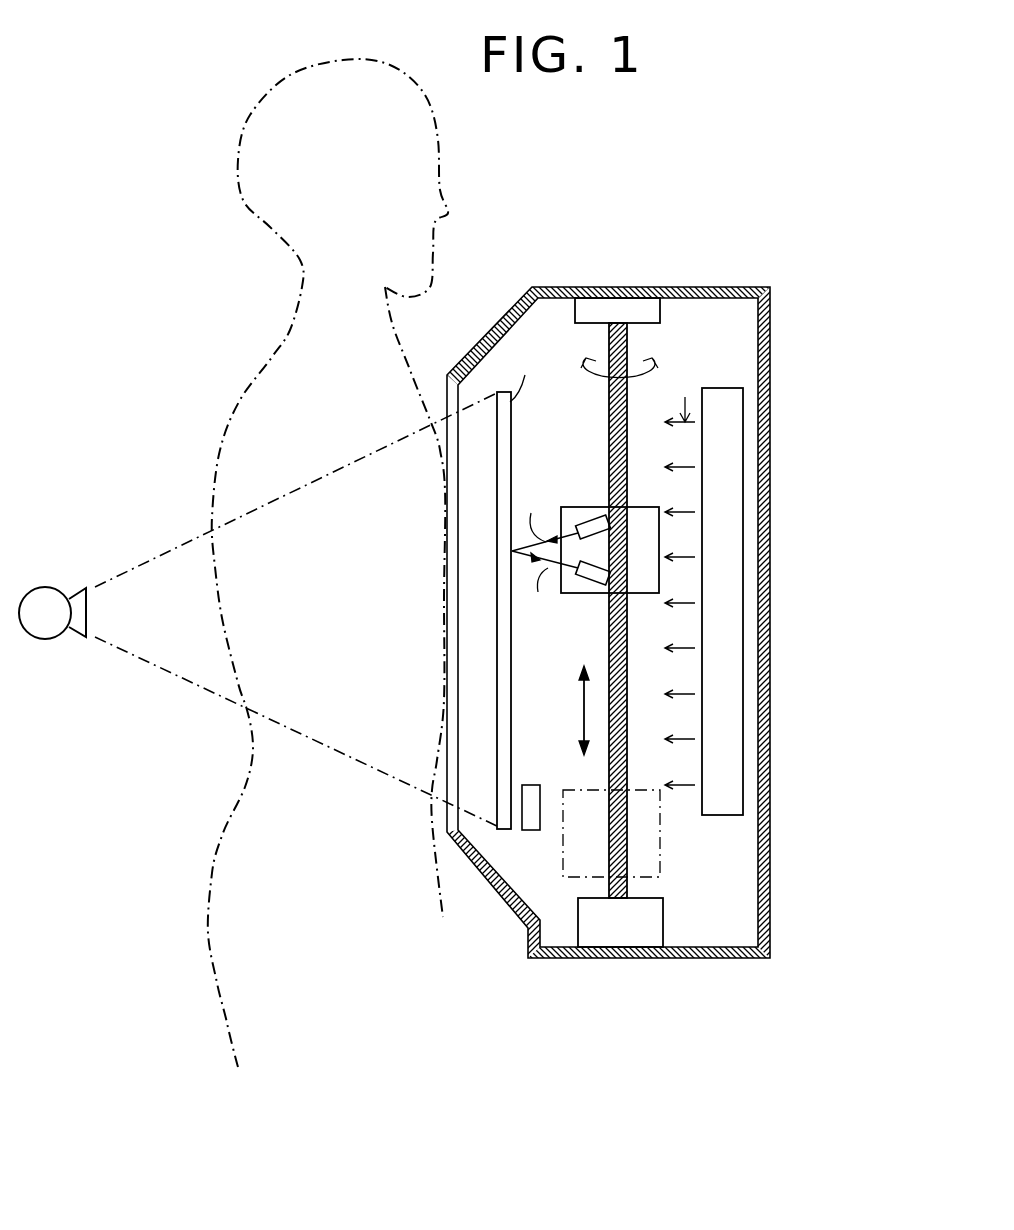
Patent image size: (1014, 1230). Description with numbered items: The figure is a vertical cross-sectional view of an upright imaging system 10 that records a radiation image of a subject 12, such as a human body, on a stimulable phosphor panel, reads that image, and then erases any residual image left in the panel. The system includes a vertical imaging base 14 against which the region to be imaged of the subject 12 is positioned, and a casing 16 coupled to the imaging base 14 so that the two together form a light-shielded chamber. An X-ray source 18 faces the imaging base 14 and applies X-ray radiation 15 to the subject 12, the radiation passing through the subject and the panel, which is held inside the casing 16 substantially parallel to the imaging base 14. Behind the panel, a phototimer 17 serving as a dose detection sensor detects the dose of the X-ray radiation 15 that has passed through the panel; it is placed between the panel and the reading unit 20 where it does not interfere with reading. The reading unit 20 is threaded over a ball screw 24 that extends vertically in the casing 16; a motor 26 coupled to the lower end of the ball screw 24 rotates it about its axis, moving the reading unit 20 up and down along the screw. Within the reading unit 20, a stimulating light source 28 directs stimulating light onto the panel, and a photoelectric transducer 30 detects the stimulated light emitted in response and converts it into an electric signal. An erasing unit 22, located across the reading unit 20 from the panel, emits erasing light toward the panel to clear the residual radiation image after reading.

The upright imaging system 10 is at (613, 230).
The subject 12 is at (262, 350).
The vertical imaging base 14 is at (445, 700).
The X-ray radiation 15 is at (170, 676).
The casing 16 is at (770, 332).
The phototimer 17 is at (531, 795).
The X-ray source 18 is at (44, 600).
The reading unit 20 is at (553, 671).
The erasing unit 22 is at (731, 821).
The ball screw 24 is at (609, 408).
The motor 26 is at (643, 922).
The stimulating light source 28 is at (600, 536).
The photoelectric transducer 30 is at (585, 582).